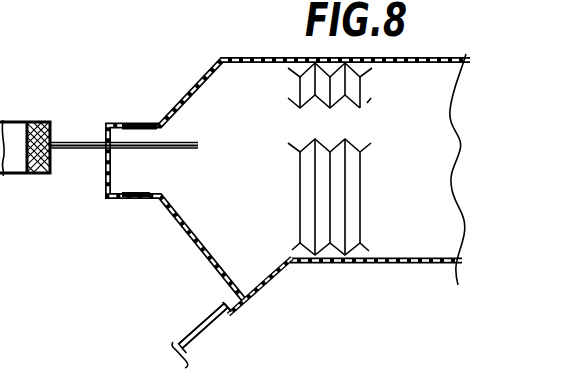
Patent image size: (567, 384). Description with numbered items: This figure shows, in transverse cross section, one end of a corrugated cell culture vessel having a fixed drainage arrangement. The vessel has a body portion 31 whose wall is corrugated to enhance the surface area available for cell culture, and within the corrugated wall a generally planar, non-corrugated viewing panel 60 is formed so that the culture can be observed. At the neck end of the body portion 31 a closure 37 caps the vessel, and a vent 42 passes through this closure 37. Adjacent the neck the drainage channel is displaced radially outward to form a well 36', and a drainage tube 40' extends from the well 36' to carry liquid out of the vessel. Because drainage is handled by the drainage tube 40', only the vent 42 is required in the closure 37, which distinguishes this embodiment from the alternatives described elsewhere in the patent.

The vent 42 is at (78, 140).
The closure 37 is at (131, 122).
The non-corrugated viewing panel 60 is at (303, 125).
The body portion 31 is at (357, 264).
The well 36' is at (280, 295).
The drainage tube 40' is at (227, 335).